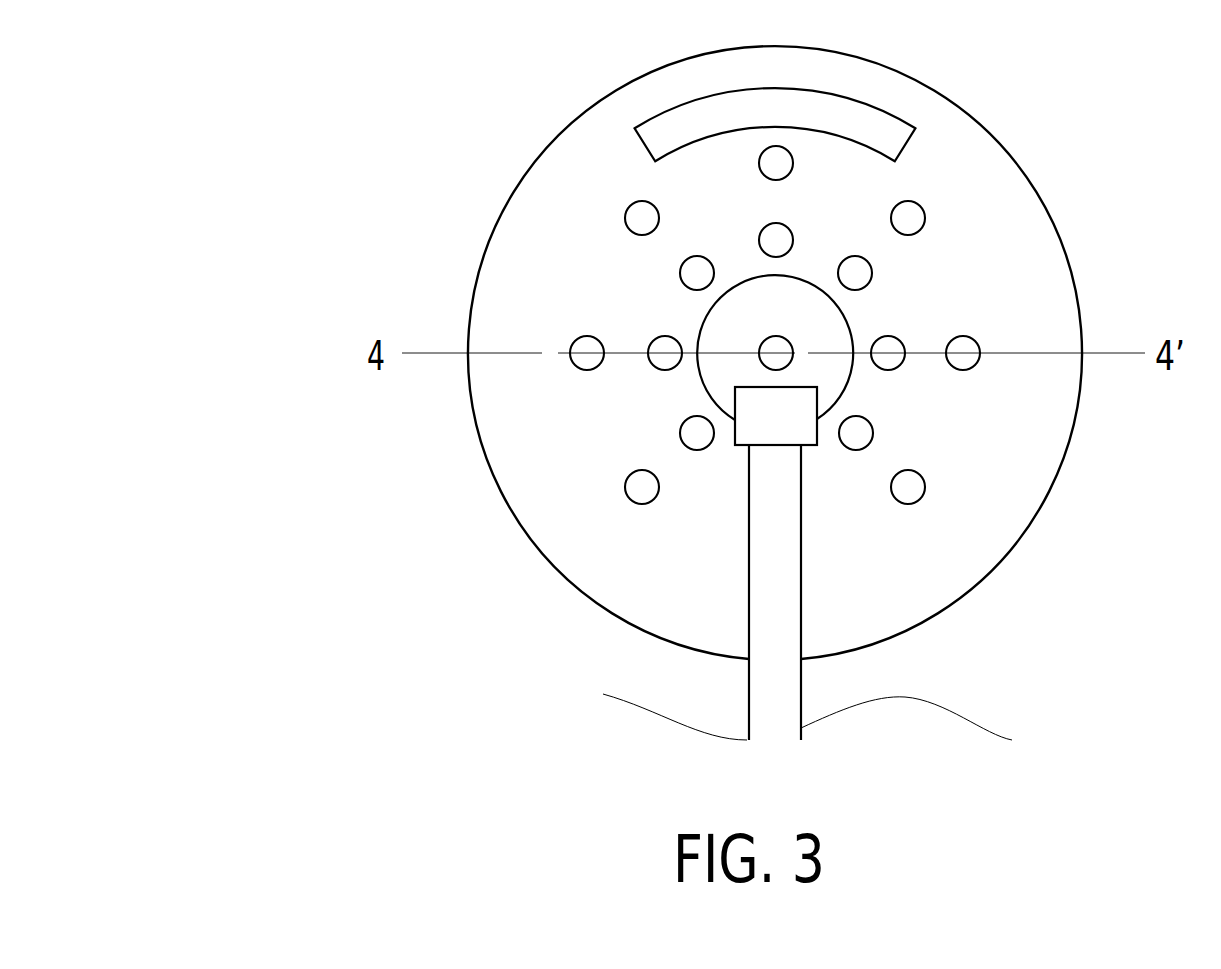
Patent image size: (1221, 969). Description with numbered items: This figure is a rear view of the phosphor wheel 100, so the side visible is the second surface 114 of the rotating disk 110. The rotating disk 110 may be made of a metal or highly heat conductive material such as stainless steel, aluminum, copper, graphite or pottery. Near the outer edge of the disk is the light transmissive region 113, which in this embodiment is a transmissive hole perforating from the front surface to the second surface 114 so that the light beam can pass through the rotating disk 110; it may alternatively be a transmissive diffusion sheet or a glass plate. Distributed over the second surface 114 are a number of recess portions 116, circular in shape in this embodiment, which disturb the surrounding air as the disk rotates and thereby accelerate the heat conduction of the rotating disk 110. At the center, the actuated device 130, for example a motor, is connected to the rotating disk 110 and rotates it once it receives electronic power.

The phosphor wheel 100 is at (206, 170).
The rotating disk 110 is at (1040, 72).
The light transmissive region 113 is at (683, 128).
The second surface 114 is at (548, 220).
The recess portion 116 is at (924, 211).
The actuated device 130 is at (802, 428).